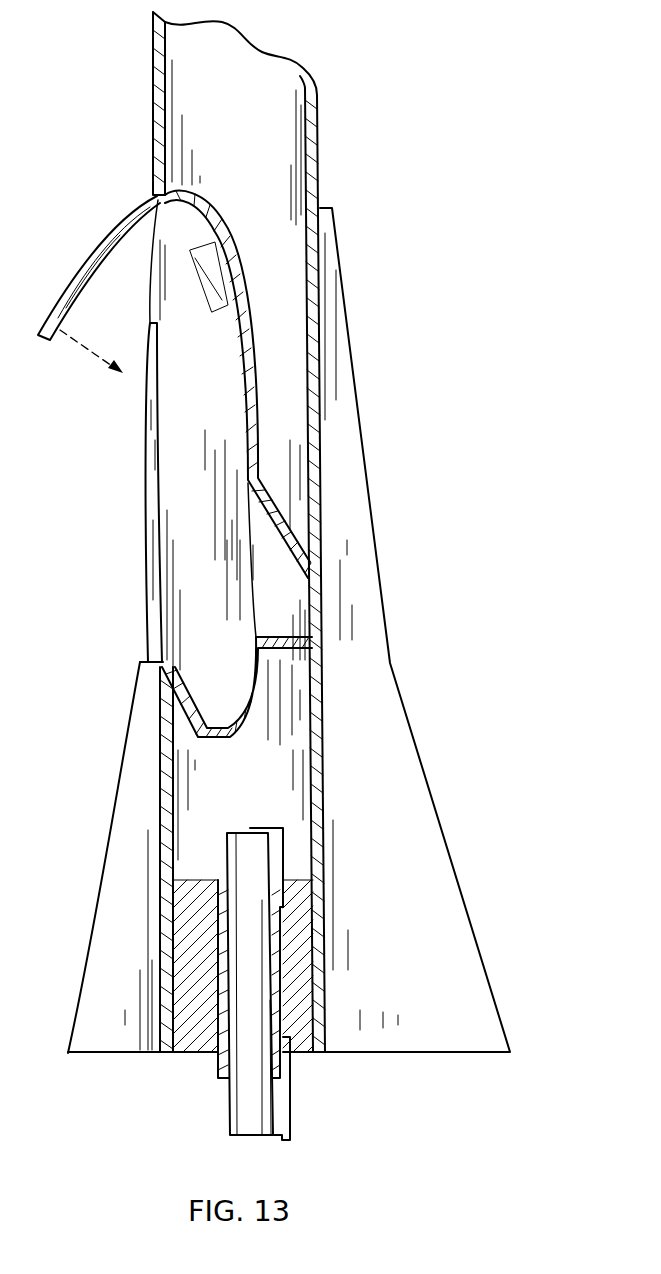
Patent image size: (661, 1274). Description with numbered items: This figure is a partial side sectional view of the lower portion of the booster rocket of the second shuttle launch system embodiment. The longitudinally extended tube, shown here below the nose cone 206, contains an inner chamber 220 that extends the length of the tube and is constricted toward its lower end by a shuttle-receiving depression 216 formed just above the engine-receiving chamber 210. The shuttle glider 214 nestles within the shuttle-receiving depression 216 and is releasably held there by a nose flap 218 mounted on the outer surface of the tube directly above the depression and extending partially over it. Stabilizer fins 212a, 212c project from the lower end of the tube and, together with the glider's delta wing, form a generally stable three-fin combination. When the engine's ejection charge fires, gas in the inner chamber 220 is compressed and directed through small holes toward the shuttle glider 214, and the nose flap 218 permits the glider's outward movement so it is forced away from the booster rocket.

The nose cone 206 is at (310, 178).
The nose flap 218 is at (80, 258).
The shuttle-receiving depression 216 is at (262, 370).
The shuttle glider 214 is at (196, 492).
The inner chamber 220 is at (272, 765).
The stabilizer fin 212a is at (398, 865).
The stabilizer fin 212c is at (112, 1013).
The engine-receiving chamber 210 is at (246, 1043).